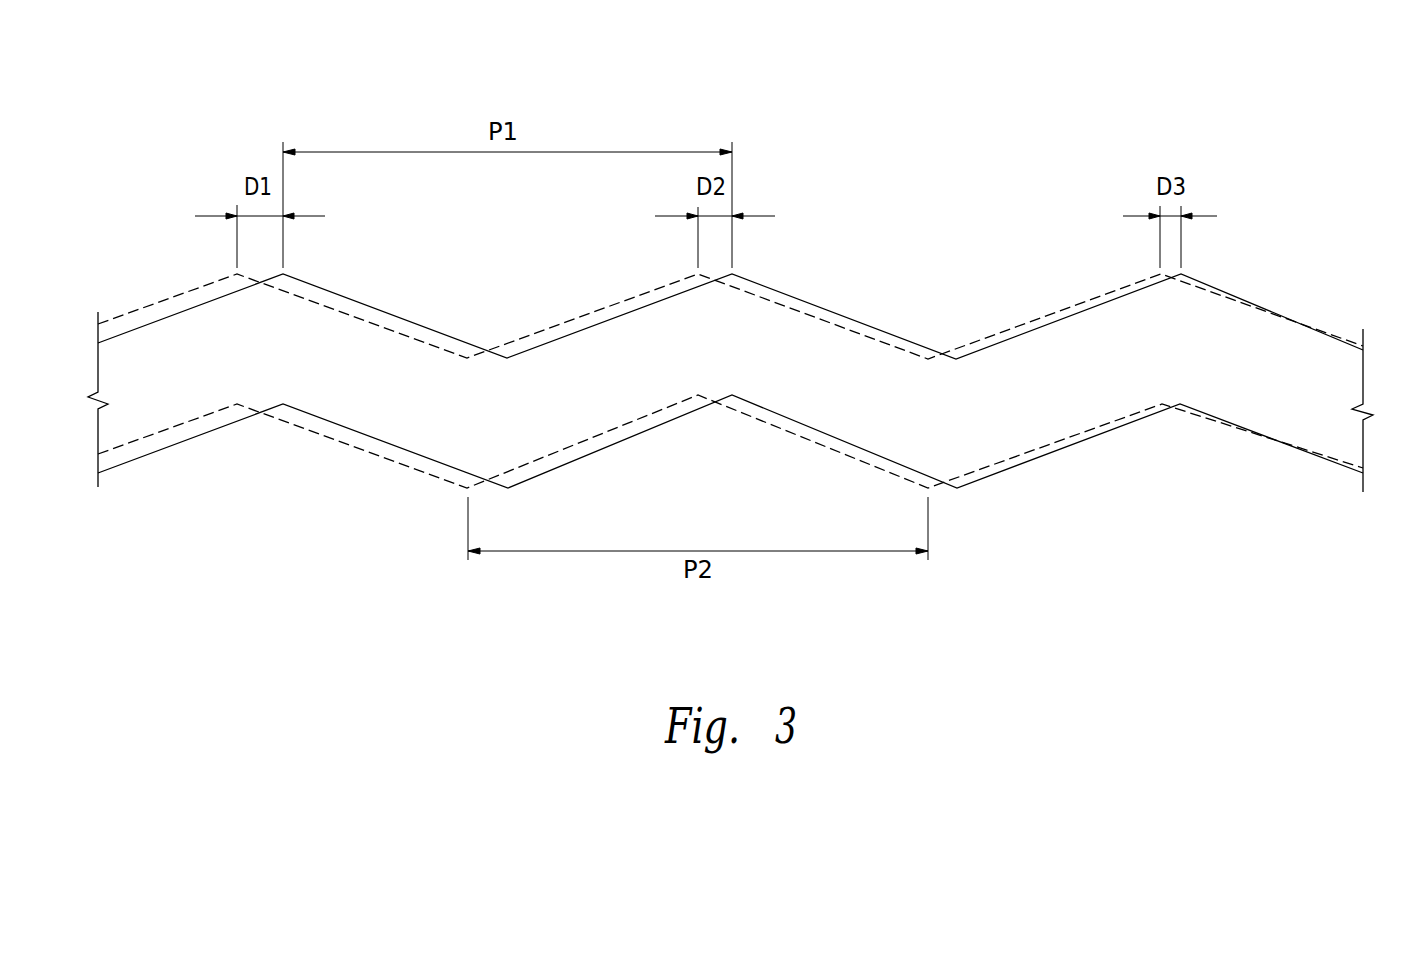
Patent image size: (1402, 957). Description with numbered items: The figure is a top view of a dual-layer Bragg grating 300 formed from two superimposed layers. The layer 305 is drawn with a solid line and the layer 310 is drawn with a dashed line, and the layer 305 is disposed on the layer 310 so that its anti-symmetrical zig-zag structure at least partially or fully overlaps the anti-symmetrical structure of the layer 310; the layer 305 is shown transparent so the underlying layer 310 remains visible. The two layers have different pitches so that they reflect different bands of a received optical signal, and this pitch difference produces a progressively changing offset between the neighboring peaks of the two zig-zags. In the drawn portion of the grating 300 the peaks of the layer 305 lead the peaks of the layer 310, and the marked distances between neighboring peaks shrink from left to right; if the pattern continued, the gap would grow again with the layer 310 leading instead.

The dual-layer Bragg grating 300 is at (915, 93).
The layer 305 is at (590, 455).
The layer 310 is at (377, 456).